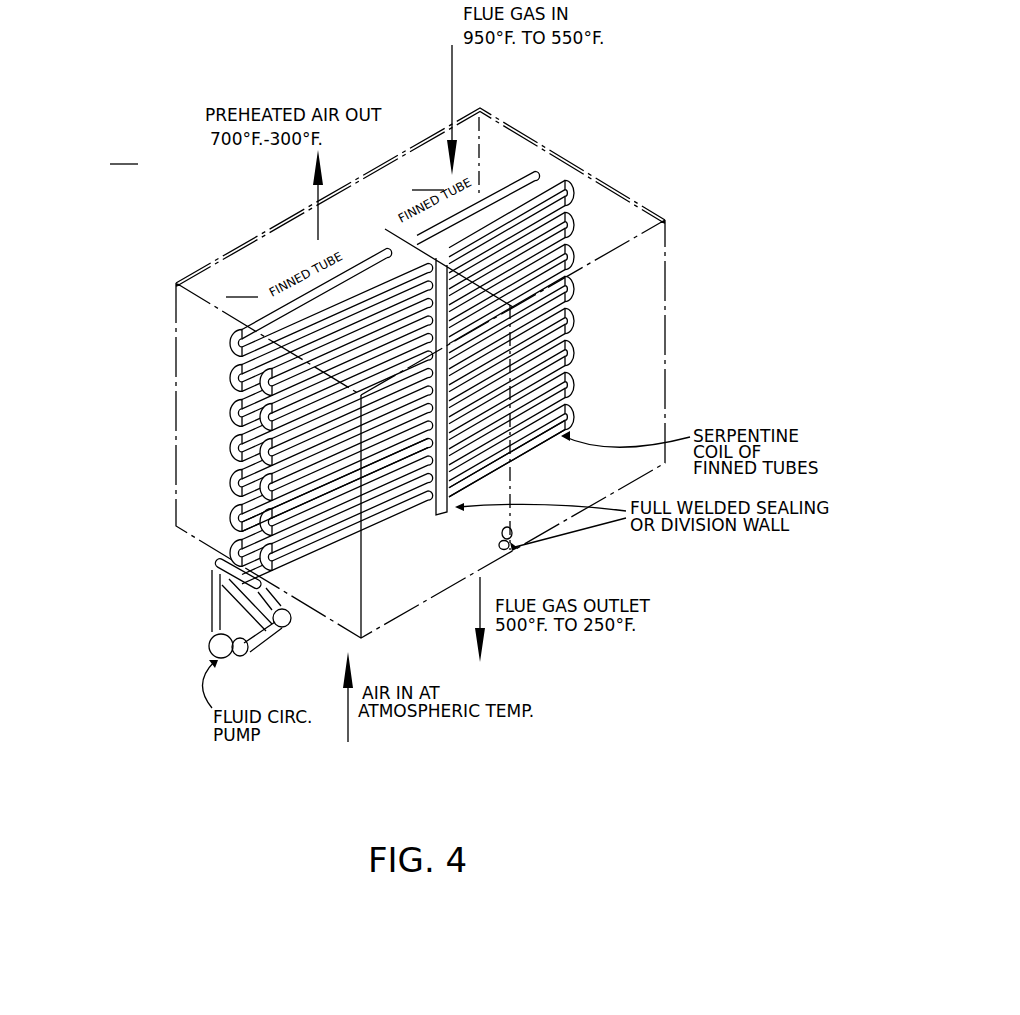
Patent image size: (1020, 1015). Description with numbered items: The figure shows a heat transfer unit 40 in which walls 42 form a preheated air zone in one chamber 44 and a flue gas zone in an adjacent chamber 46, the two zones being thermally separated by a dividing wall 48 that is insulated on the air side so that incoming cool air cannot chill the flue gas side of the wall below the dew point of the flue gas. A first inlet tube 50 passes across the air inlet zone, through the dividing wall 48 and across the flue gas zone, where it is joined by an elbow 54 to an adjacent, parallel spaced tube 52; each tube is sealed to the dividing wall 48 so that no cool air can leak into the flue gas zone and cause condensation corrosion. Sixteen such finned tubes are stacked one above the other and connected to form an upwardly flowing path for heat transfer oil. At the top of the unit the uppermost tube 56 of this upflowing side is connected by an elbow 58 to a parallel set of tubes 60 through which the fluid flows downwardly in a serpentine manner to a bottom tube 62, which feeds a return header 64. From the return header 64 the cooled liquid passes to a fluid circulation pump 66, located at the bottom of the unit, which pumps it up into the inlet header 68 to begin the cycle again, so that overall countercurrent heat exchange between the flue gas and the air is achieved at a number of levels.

The unit 40 is at (387, 373).
The walls 42 is at (399, 373).
The chamber 44 is at (413, 416).
The chamber 46 is at (521, 318).
The dividing wall 48 is at (444, 369).
The first inlet tube 50 is at (436, 497).
The adjacent parallel spaced tube 52 is at (597, 377).
The elbow 54 is at (597, 408).
The uppermost tube 56 is at (513, 192).
The elbow 58 is at (219, 351).
The parallel set of tubes 60 is at (317, 293).
The bottom tube 62 is at (219, 538).
The return header 64 is at (224, 593).
The fluid circulation pump 66 is at (220, 641).
The inlet header 68 is at (303, 628).